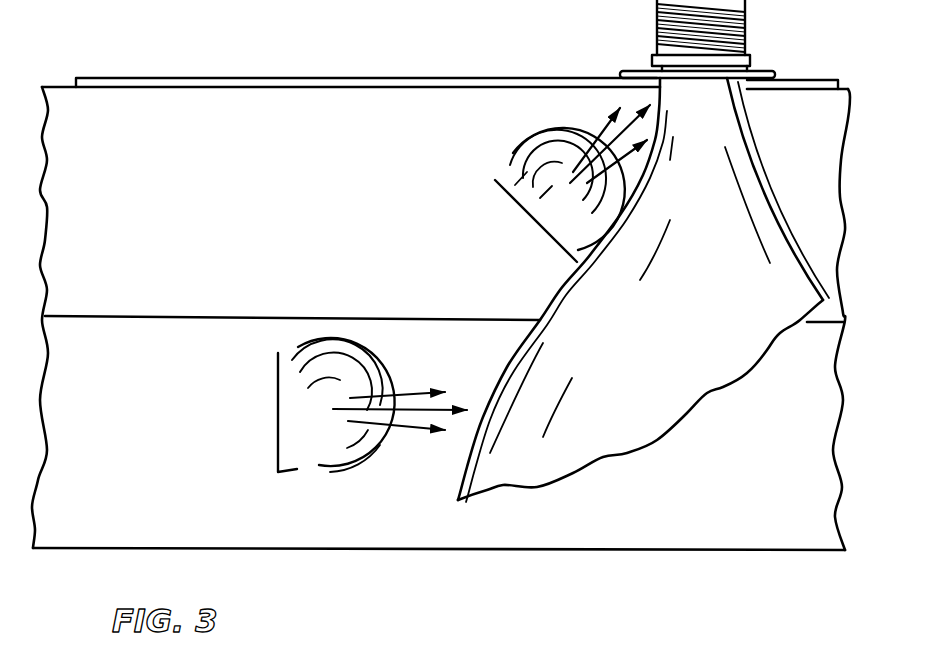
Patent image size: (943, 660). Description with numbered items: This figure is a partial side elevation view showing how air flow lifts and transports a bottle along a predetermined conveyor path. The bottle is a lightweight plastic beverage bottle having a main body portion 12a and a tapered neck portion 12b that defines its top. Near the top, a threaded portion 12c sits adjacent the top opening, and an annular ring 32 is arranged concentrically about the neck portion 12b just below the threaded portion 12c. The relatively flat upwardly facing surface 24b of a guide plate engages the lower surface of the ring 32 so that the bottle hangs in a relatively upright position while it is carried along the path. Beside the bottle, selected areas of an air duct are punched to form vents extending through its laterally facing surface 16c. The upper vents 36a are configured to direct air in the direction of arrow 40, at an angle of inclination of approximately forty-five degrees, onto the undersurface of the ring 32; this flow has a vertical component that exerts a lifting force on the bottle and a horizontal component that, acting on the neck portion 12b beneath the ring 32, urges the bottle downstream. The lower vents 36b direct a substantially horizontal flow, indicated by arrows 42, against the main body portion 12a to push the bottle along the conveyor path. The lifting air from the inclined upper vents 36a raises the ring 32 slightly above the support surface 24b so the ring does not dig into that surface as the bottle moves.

The main body portion 12a is at (508, 365).
The tapered neck portion 12b is at (750, 128).
The threaded portion 12c is at (657, 33).
The annular ring 32 is at (765, 70).
The upwardly facing surface 24b is at (455, 78).
The laterally facing surface 16c is at (302, 212).
The upper vents 36a is at (545, 199).
The lower vents 36b is at (278, 413).
The arrow 40 is at (602, 130).
The arrows 42 is at (405, 392).